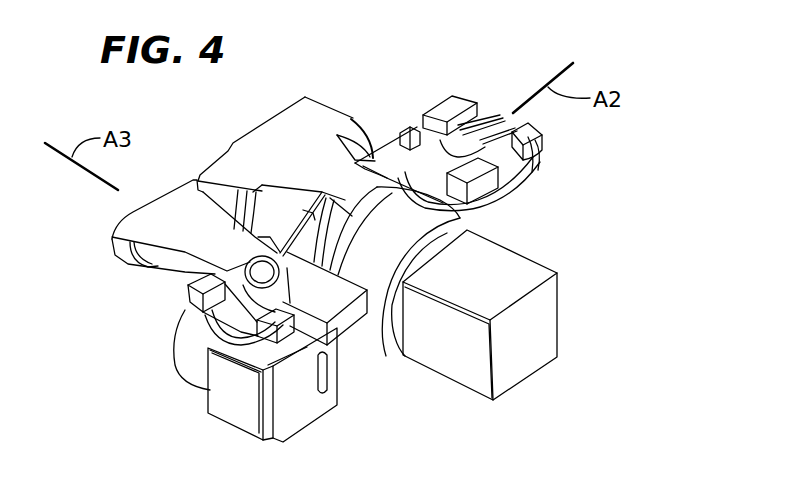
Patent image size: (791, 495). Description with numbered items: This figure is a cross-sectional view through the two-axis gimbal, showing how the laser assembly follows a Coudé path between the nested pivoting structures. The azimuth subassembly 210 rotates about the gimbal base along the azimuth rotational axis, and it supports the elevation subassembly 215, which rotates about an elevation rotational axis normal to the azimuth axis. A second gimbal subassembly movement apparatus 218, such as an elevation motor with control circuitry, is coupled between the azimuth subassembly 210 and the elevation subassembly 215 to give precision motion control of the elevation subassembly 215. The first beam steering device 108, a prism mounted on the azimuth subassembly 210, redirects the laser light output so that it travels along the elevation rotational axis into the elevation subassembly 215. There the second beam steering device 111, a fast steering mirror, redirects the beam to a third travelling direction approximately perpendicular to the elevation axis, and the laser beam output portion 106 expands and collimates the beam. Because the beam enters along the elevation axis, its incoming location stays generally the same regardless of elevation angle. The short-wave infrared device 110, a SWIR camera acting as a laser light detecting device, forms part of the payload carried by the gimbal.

The laser beam output portion 106 is at (160, 257).
The first beam steering device 108 is at (208, 322).
The short-wave infrared (SWIR) device 110 is at (530, 257).
The second beam steering device 111 is at (347, 320).
The azimuth subassembly 210 is at (505, 109).
The elevation subassembly 215 is at (393, 153).
The second gimbal subassembly movement apparatus 218 is at (458, 100).